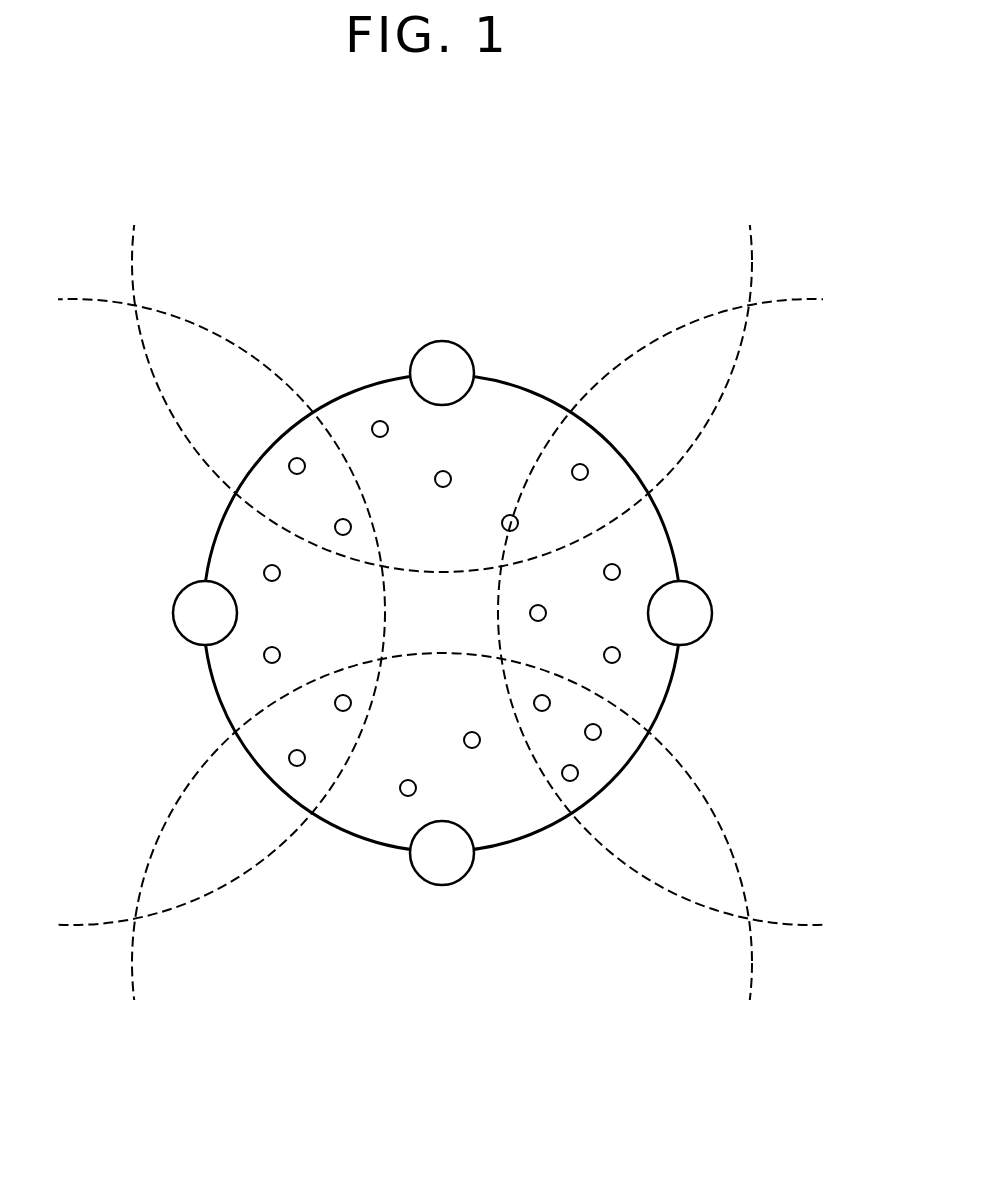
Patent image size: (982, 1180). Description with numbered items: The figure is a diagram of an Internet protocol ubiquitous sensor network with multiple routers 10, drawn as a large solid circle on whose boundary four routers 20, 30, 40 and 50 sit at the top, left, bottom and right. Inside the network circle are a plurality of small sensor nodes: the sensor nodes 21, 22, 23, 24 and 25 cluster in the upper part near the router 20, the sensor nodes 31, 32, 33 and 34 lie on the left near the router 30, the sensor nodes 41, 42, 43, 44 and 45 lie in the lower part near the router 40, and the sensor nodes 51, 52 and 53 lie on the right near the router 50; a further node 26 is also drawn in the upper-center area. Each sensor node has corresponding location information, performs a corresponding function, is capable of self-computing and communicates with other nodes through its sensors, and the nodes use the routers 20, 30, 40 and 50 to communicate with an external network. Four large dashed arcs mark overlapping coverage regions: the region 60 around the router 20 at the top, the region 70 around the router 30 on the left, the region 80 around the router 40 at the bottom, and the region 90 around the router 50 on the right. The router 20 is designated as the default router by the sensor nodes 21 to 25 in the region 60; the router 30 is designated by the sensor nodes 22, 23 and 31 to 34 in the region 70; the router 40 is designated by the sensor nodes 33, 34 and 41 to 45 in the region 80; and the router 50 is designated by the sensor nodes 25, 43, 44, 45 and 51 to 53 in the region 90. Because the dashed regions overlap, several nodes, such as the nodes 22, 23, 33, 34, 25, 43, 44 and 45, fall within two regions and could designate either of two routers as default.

The IP-USN with multiple routers 10 is at (656, 508).
The router 20 is at (442, 341).
The sensor node 21 is at (378, 421).
The sensor node 22 is at (305, 466).
The sensor node 23 is at (350, 525).
The sensor node 24 is at (448, 474).
The sensor node 25 is at (580, 463).
The user equipment 26 is at (502, 523).
The router 30 is at (173, 613).
The sensor node 31 is at (280, 573).
The sensor node 32 is at (279, 651).
The sensor node 33 is at (350, 701).
The sensor node 34 is at (290, 753).
The router 40 is at (442, 885).
The sensor node 41 is at (408, 780).
The sensor node 42 is at (476, 747).
The sensor node 43 is at (570, 781).
The sensor node 44 is at (600, 730).
The sensor node 45 is at (534, 703).
The router 50 is at (712, 613).
The sensor node 51 is at (620, 658).
The sensor node 52 is at (620, 570).
The sensor node 53 is at (546, 613).
The region 60 is at (721, 398).
The region 70 is at (232, 342).
The region 80 is at (147, 868).
The region 90 is at (668, 890).